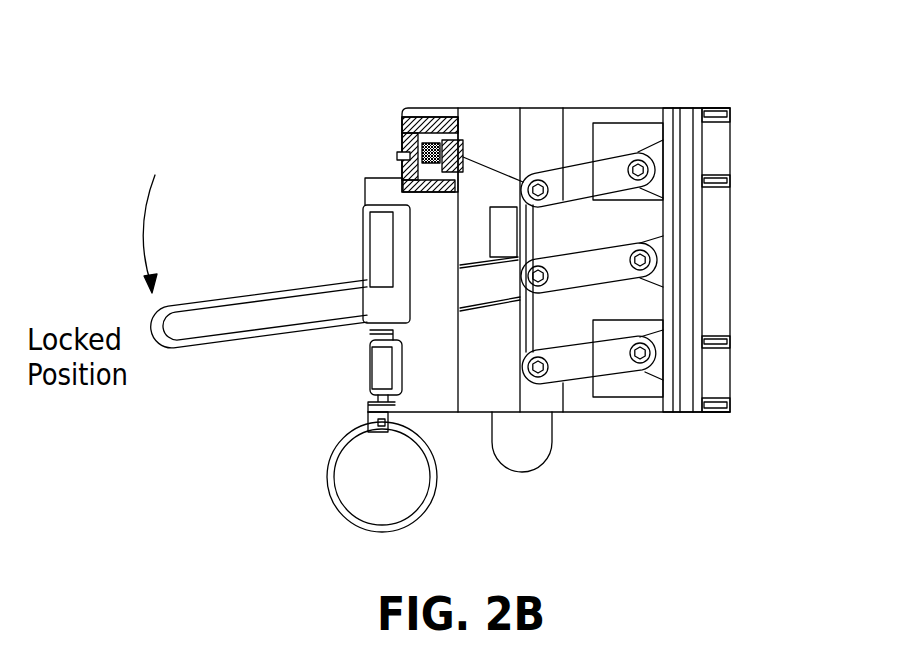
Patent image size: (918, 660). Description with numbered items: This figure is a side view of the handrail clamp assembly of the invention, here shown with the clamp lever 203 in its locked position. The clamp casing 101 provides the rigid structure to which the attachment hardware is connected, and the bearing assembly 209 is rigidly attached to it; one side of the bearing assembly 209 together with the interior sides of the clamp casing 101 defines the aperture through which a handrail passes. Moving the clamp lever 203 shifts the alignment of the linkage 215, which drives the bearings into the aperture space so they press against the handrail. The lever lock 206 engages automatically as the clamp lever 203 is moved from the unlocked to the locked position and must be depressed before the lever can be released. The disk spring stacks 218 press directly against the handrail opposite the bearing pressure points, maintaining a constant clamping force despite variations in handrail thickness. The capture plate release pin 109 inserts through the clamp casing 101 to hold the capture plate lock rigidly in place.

The clamp casing 101 is at (723, 107).
The capture plate release pin 109 is at (333, 450).
The clamp lever 203 is at (303, 285).
The lever lock 206 is at (550, 453).
The bearing assembly 209 is at (577, 140).
The linkage 215 is at (597, 355).
The disk spring stacks 218 is at (423, 112).